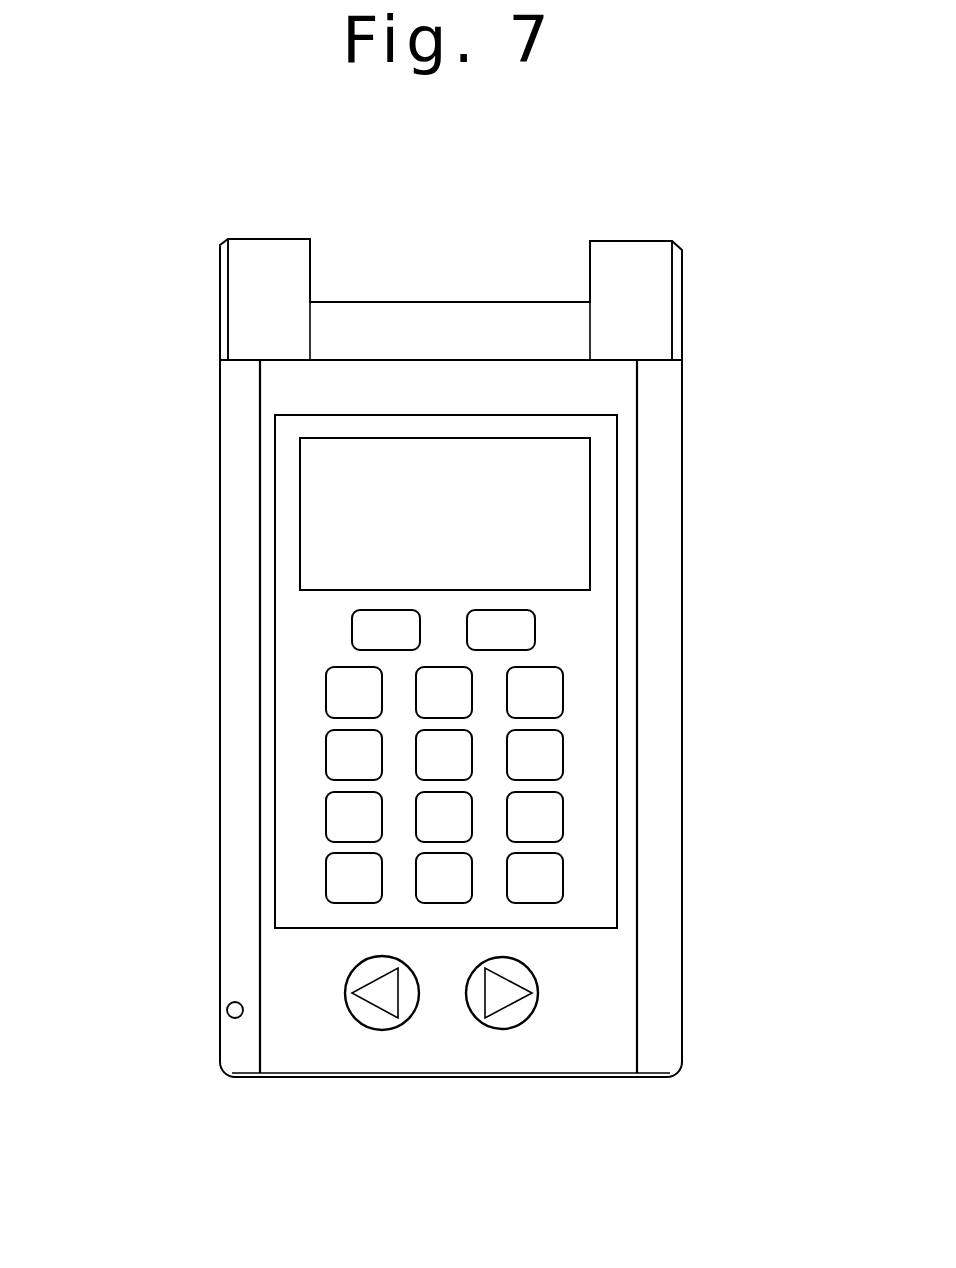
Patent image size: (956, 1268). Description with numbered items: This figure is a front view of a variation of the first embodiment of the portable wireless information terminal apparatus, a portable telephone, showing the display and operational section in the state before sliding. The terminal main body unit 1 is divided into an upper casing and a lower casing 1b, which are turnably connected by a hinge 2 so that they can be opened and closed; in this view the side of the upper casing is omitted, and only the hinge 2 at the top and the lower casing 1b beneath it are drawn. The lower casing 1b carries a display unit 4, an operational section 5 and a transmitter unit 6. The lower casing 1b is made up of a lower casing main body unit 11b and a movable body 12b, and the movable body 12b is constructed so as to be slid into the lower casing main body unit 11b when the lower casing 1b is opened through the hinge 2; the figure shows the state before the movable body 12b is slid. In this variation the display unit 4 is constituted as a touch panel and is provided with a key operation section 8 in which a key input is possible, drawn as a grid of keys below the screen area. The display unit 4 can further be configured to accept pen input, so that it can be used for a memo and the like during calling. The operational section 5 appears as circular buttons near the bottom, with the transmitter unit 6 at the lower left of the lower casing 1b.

The terminal main body unit 1 is at (106, 276).
The hinge 2 is at (645, 307).
The display unit 4 is at (583, 638).
The key operation section 8 is at (335, 744).
The lower casing 1b is at (660, 780).
The lower casing main body unit 11b is at (655, 867).
The transmitter unit 6 is at (227, 1010).
The movable body 12b is at (345, 1053).
The operational section 5 is at (510, 1020).